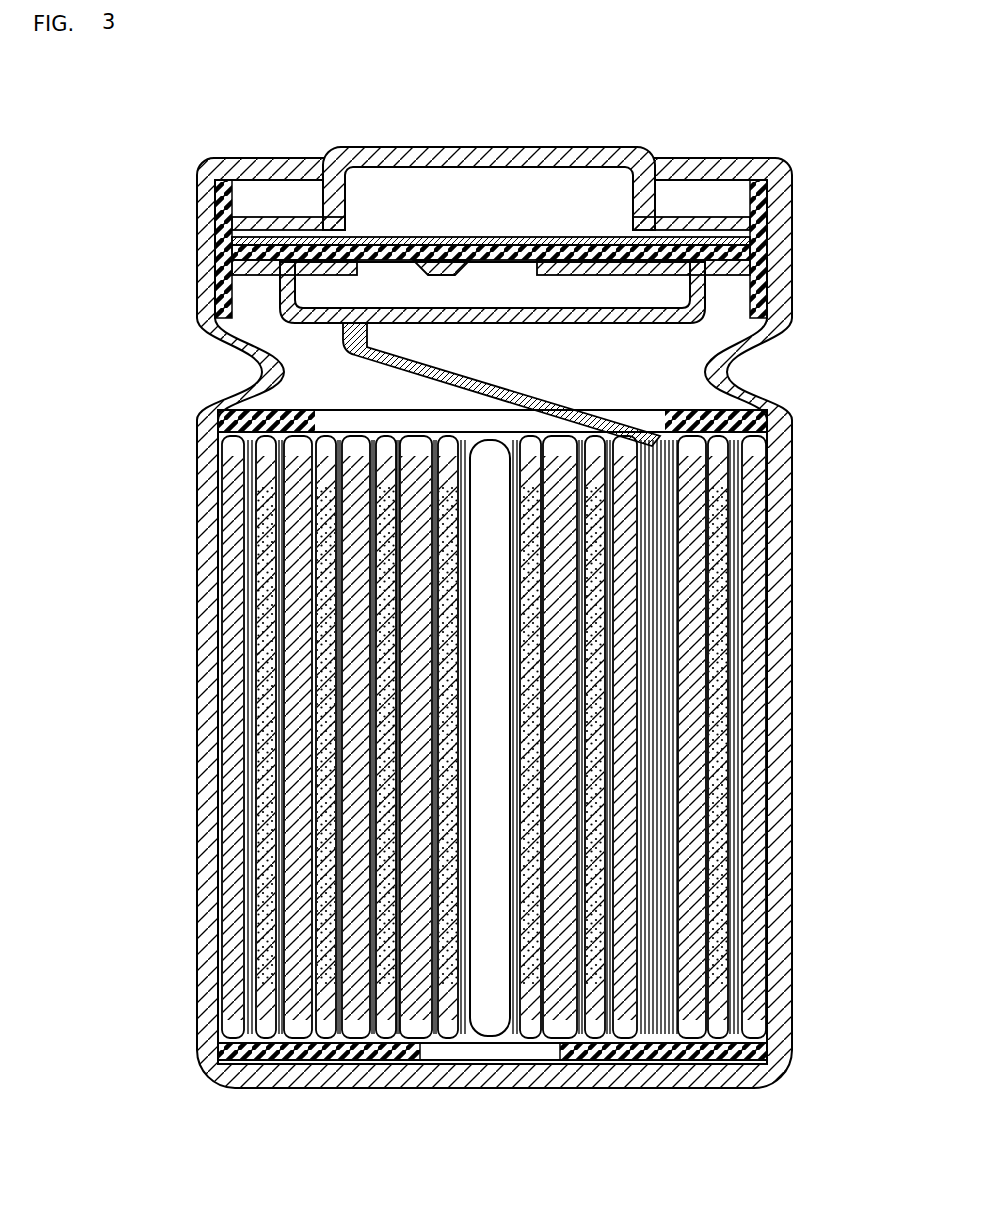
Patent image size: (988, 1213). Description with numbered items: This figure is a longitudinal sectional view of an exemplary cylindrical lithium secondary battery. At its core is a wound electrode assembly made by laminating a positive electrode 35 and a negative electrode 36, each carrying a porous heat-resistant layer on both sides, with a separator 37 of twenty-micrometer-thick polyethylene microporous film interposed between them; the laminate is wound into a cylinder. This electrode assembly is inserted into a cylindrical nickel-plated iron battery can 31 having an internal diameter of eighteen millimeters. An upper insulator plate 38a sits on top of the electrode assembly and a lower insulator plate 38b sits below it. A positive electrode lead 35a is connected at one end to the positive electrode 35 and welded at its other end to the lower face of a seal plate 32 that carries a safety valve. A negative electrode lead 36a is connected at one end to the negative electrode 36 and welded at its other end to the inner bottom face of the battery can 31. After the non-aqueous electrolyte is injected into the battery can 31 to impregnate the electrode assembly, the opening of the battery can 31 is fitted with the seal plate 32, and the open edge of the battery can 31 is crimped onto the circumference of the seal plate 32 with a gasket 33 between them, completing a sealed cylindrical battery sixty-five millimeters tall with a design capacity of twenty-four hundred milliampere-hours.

The battery can 31 is at (216, 614).
The seal plate 32 is at (404, 158).
The gasket 33 is at (757, 244).
The positive electrode 35 is at (717, 840).
The positive electrode lead 35a is at (540, 408).
The negative electrode 36 is at (747, 778).
The negative electrode lead 36a is at (548, 1062).
The separator 37 is at (765, 662).
The insulator plate 38a is at (768, 422).
The insulator plate 38b is at (772, 1062).